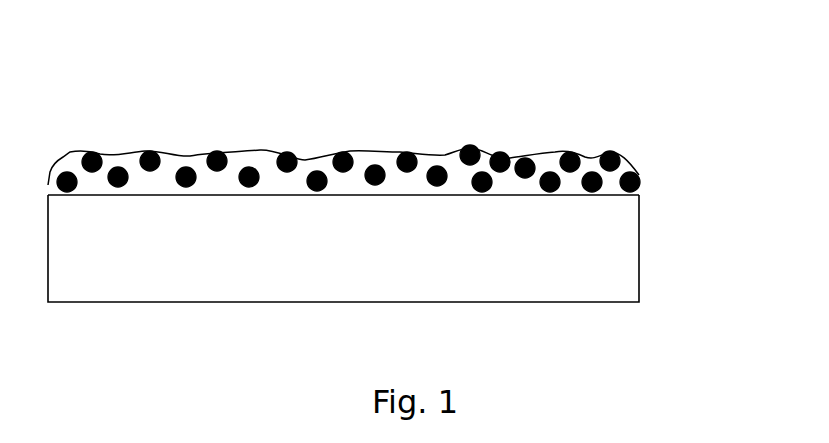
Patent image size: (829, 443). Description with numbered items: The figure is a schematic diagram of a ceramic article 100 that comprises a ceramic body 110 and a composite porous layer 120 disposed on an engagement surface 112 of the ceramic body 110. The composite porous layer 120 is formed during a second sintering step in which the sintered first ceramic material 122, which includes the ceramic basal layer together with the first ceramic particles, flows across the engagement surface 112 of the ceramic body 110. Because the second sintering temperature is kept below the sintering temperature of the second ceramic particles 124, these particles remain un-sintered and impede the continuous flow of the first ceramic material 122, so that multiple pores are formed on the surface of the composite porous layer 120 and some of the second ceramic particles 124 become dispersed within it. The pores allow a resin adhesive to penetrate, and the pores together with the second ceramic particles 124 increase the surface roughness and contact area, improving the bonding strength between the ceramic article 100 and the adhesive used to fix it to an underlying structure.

The ceramic article 100 is at (419, 166).
The ceramic body 110 is at (620, 285).
The engagement surface 112 is at (610, 197).
The composite porous layer 120 is at (426, 134).
The first ceramic material 122 is at (585, 160).
The second ceramic particles 124 is at (613, 152).